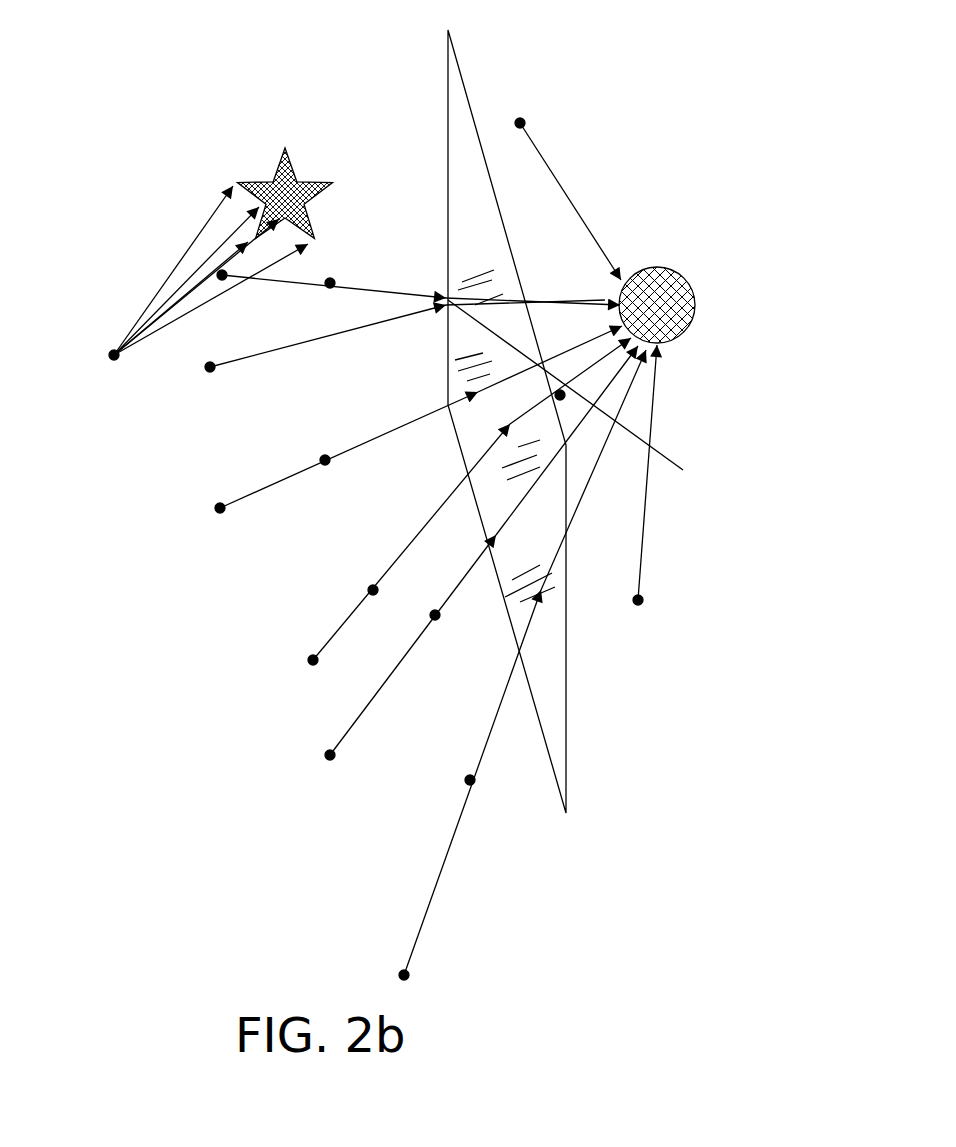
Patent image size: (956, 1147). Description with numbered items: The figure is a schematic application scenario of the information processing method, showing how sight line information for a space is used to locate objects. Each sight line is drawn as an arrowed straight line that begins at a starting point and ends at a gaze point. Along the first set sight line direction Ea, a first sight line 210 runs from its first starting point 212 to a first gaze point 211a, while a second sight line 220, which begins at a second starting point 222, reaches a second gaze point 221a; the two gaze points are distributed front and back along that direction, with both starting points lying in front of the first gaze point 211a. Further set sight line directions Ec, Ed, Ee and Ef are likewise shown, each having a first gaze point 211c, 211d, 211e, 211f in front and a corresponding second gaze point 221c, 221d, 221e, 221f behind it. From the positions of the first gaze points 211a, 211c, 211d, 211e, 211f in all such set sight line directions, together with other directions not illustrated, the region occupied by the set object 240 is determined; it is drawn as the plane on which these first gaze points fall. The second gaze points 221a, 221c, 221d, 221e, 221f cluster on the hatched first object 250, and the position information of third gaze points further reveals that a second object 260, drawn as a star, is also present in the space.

The second object 260 is at (285, 148).
The set object 240 is at (448, 138).
The first object 250 is at (662, 268).
The first sight line 210 is at (343, 622).
The first starting point 212 is at (308, 659).
The second starting point 222 is at (376, 593).
The second sight line 220 is at (586, 400).
The second gaze point 221a is at (612, 283).
The second gaze point 221c is at (694, 298).
The second gaze point 221d is at (697, 321).
The second gaze point 221e is at (668, 343).
The second gaze point 221f is at (646, 360).
The first gaze point 211a is at (508, 472).
The first gaze point 211c is at (462, 300).
The first gaze point 211d is at (472, 385).
The first gaze point 211e is at (553, 575).
The first gaze point 211f is at (497, 537).